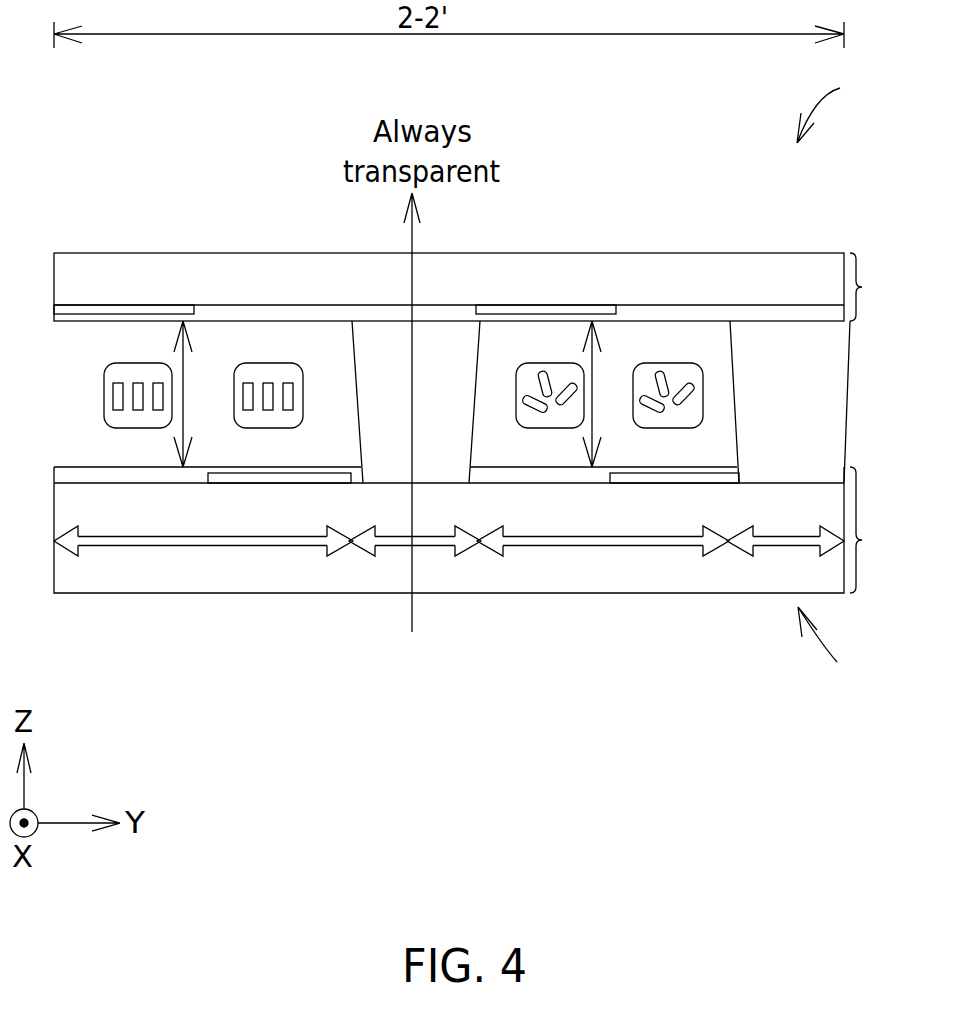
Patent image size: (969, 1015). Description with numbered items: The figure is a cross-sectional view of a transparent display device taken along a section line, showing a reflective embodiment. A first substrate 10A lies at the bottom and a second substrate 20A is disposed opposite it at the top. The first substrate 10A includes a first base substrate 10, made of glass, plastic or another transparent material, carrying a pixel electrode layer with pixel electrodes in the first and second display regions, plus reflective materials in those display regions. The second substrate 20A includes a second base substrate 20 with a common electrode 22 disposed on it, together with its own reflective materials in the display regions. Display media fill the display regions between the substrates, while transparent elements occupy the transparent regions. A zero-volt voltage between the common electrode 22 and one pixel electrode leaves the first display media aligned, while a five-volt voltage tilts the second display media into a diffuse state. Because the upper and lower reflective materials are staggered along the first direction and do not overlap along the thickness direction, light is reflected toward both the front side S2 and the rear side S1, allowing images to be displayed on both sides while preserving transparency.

The second base substrate 20 is at (460, 297).
The common electrode 22 is at (799, 312).
The second substrate 20A is at (887, 287).
The front side S2 is at (837, 105).
The first base substrate 10 is at (613, 585).
The first substrate 10A is at (885, 530).
The rear side S1 is at (836, 647).